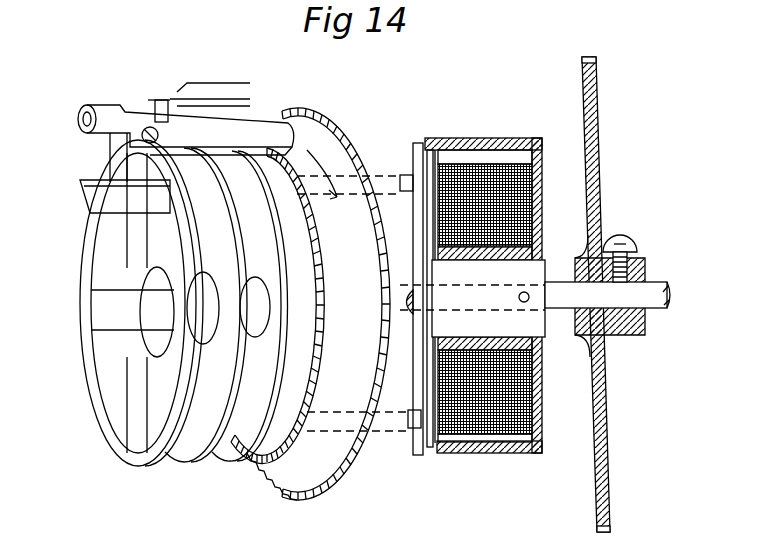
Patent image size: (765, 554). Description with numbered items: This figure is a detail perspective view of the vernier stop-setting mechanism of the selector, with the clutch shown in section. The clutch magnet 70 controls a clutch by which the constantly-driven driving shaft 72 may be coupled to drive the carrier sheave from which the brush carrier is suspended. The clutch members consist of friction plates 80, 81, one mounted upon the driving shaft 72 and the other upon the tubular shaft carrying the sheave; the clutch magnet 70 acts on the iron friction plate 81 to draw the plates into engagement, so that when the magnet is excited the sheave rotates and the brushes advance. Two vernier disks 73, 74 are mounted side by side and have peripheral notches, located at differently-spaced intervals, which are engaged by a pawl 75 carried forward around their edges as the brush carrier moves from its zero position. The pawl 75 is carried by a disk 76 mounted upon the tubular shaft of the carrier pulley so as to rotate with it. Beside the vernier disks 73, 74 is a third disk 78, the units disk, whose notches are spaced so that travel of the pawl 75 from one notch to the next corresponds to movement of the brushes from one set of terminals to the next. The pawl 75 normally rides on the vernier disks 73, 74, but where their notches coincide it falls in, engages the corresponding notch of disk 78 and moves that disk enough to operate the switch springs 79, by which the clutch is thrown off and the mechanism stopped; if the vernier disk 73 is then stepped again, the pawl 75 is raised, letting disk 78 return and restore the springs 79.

The clutch magnet 70 is at (480, 165).
The driving shaft 72 is at (556, 285).
The vernier disk 73 is at (207, 463).
The vernier disk 74 is at (152, 467).
The pawl 75 is at (186, 159).
The disk 76 is at (330, 114).
The units disk 78 is at (245, 468).
The switch springs 79 is at (212, 84).
The friction plate 80 is at (430, 160).
The friction plate 81 is at (420, 143).